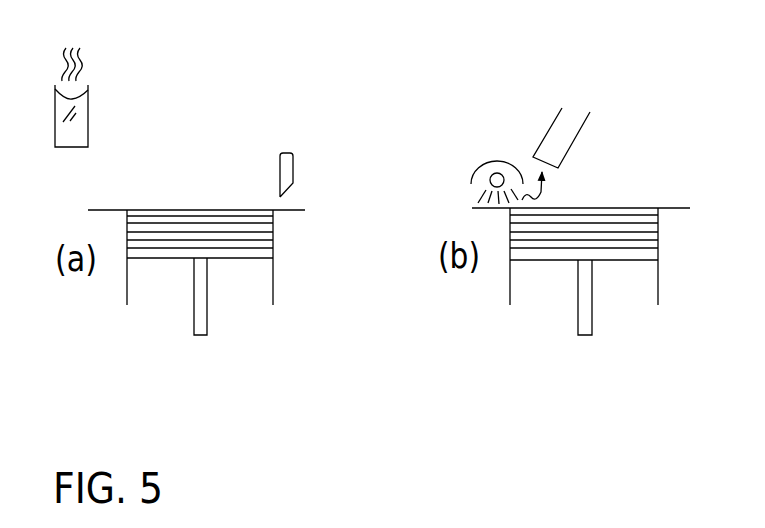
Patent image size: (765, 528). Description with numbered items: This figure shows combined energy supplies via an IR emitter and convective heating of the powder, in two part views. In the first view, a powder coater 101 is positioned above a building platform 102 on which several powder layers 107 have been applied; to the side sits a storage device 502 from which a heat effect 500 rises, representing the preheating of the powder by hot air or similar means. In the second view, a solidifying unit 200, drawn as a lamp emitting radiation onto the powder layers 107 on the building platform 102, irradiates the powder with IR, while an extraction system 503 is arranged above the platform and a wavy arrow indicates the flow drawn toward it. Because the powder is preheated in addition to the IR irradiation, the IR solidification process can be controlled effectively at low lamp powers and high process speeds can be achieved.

The powder coater 101 is at (285, 167).
The building platform 102 is at (252, 253).
The powder layers 107 is at (165, 237).
The solidifying unit 200 is at (492, 172).
The heat effect 500 is at (83, 63).
The storage device 502 is at (88, 147).
The extraction system 503 is at (560, 135).